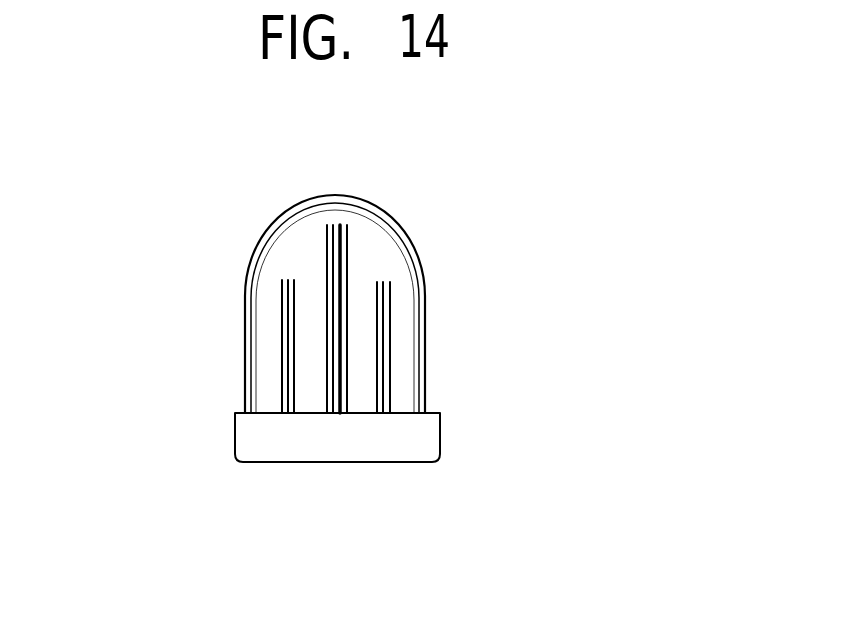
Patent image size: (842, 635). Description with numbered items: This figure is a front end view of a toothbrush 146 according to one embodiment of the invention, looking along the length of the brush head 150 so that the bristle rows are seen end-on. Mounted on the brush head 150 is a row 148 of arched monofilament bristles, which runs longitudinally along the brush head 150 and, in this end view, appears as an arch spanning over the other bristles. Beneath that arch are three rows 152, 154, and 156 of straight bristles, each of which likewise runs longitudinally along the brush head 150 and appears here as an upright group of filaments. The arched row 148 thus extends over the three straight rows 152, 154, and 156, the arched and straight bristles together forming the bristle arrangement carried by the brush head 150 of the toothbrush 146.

The toothbrush 146 is at (535, 307).
The row of arched monofilament bristles 148 is at (393, 218).
The brush head 150 is at (428, 435).
The row of straight bristles 152 is at (283, 353).
The row of straight bristles 154 is at (330, 376).
The row of straight bristles 156 is at (380, 382).